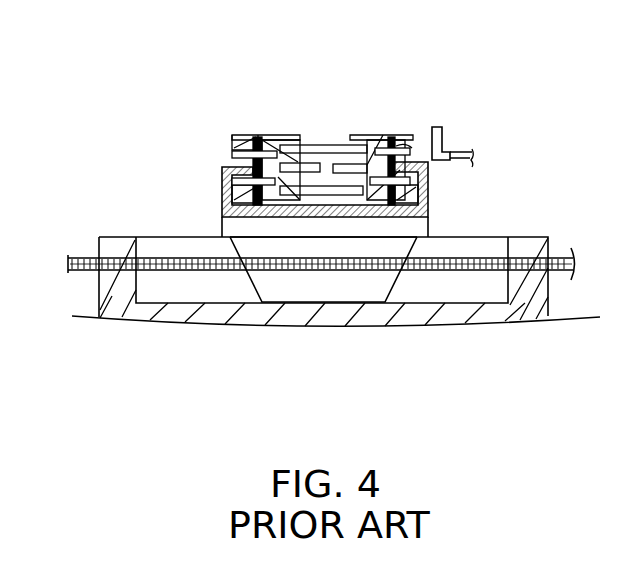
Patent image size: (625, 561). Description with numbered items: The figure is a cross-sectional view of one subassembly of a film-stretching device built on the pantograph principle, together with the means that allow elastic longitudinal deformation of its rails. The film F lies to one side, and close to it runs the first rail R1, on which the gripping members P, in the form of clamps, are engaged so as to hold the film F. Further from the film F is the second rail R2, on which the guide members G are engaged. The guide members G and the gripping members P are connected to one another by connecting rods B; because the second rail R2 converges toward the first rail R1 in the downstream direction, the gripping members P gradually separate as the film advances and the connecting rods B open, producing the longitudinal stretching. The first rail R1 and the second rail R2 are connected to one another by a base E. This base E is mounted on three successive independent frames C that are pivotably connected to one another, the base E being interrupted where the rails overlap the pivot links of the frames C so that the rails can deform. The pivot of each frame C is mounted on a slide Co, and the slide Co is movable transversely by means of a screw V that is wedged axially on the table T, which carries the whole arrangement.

The screw V is at (78, 258).
The table T is at (113, 236).
The frame C is at (222, 228).
The slide Co is at (420, 248).
The base E is at (430, 192).
The guide member G is at (267, 140).
The connecting rod B is at (320, 140).
The gripping member P is at (377, 140).
The first rail R1 is at (429, 138).
The second rail R2 is at (232, 156).
The film F is at (468, 152).